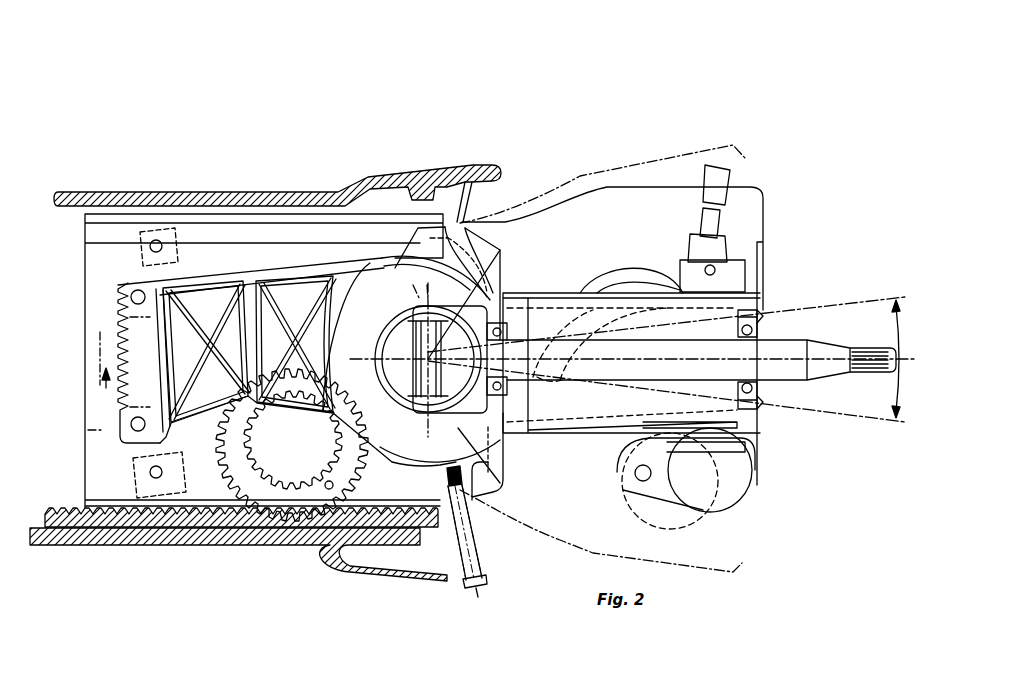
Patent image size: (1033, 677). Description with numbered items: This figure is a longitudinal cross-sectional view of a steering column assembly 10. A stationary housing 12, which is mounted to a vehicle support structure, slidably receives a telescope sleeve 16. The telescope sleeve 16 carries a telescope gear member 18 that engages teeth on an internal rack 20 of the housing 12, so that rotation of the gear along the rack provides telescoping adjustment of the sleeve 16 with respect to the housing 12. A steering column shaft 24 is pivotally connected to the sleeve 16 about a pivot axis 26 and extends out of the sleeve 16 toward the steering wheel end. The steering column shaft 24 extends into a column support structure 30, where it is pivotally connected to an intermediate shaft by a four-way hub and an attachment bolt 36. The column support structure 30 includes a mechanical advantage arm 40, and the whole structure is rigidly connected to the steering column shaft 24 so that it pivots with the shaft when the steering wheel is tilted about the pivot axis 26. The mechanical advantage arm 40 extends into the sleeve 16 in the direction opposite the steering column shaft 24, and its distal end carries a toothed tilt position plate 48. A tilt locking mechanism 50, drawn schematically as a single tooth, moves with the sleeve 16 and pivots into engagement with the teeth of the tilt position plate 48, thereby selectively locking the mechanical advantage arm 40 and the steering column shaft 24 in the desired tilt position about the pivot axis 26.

The steering column assembly 10 is at (567, 132).
The stationary housing 12 is at (138, 192).
The telescope sleeve 16 is at (270, 220).
The telescope gear member 18 is at (232, 486).
The internal rack 20 is at (100, 520).
The steering column shaft 24 is at (780, 370).
The pivot axis 26 is at (487, 293).
The column support structure 30 is at (500, 462).
The attachment bolt 36 is at (478, 543).
The mechanical advantage arm 40 is at (212, 270).
The toothed tilt position plate 48 is at (122, 404).
The tilt locking mechanism 50 is at (106, 388).